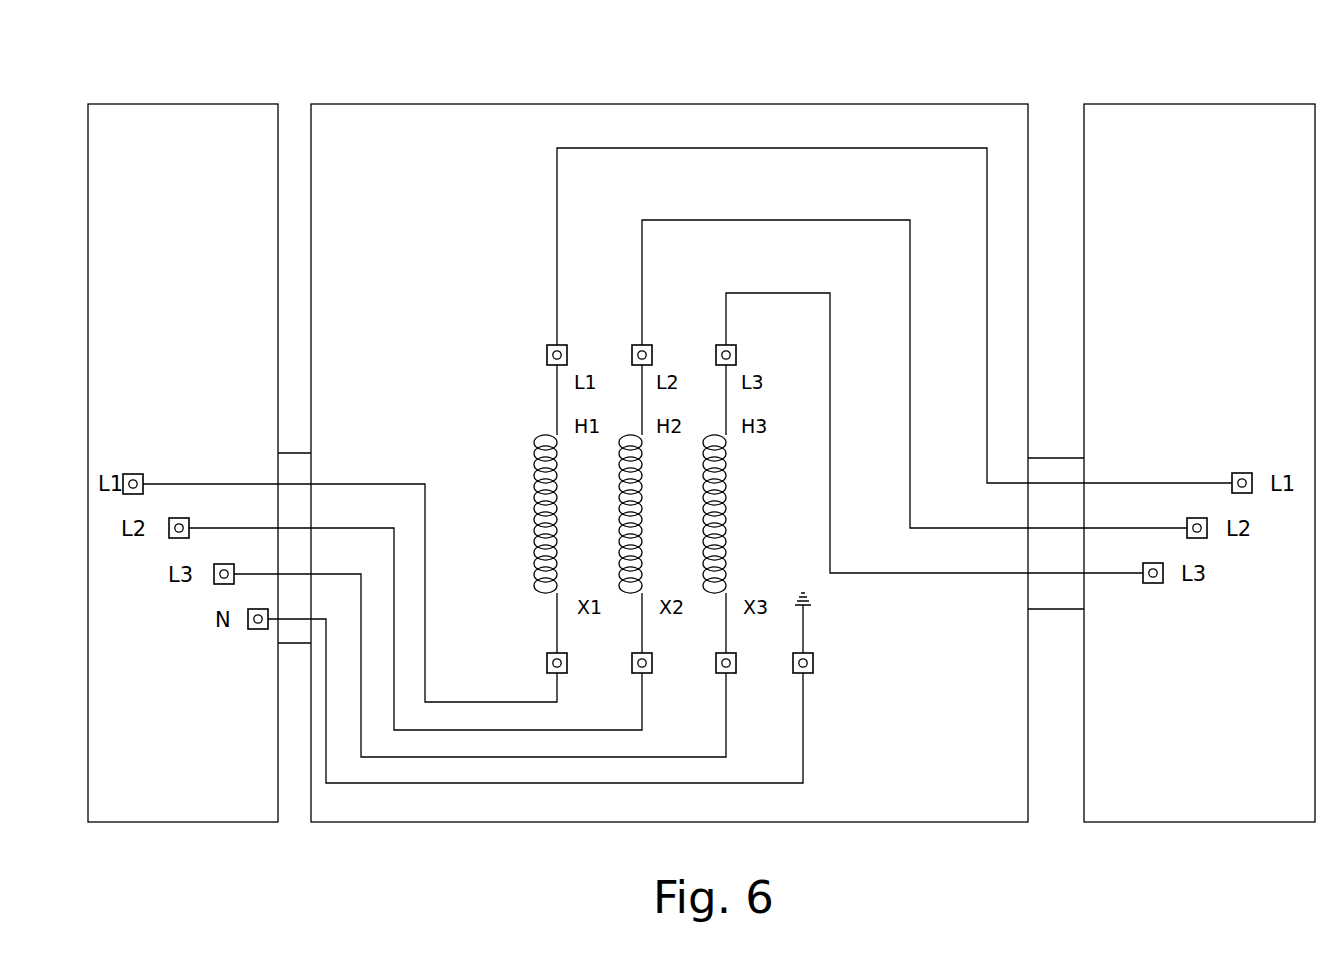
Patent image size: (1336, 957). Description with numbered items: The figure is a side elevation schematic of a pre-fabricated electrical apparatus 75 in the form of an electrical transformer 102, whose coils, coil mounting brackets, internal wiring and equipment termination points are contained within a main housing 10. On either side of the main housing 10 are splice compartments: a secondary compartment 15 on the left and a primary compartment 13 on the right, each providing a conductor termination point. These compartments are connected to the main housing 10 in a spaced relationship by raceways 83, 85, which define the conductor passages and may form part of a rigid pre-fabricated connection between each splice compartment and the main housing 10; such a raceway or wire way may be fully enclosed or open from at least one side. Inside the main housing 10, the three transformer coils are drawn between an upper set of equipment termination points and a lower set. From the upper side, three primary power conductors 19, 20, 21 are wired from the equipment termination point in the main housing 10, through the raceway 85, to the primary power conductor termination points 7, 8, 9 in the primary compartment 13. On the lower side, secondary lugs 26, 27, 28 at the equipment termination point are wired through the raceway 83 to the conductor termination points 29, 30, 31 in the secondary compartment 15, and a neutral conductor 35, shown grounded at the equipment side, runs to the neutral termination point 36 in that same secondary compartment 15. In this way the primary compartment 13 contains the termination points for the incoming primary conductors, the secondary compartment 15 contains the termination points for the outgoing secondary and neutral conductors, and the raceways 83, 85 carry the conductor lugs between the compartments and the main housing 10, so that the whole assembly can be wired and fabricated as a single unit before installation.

The pre-fabricated electrical apparatus 75 is at (1202, 62).
The electrical transformer 102 is at (857, 94).
The secondary compartment 15 is at (183, 463).
The primary compartment 13 is at (1199, 463).
The main housing 10 is at (401, 307).
The raceway 83 is at (297, 453).
The raceway 85 is at (1054, 456).
The conductor termination point 29 is at (134, 473).
The conductor termination point 30 is at (186, 518).
The conductor termination point 31 is at (229, 563).
The neutral termination point 36 is at (256, 630).
The primary power conductor 19 is at (985, 258).
The primary power conductor 20 is at (908, 345).
The primary power conductor 21 is at (828, 400).
The primary power conductor termination point 7 is at (1243, 471).
The primary power conductor termination point 8 is at (1191, 518).
The primary power conductor termination point 9 is at (1146, 565).
The secondary lug 26 is at (563, 688).
The secondary lug 27 is at (645, 690).
The secondary lug 28 is at (728, 696).
The neutral conductor 35 is at (805, 722).